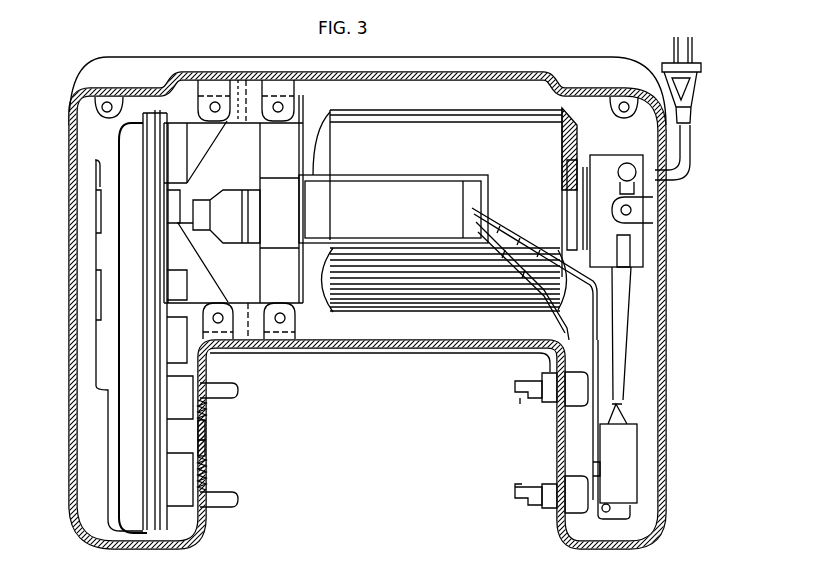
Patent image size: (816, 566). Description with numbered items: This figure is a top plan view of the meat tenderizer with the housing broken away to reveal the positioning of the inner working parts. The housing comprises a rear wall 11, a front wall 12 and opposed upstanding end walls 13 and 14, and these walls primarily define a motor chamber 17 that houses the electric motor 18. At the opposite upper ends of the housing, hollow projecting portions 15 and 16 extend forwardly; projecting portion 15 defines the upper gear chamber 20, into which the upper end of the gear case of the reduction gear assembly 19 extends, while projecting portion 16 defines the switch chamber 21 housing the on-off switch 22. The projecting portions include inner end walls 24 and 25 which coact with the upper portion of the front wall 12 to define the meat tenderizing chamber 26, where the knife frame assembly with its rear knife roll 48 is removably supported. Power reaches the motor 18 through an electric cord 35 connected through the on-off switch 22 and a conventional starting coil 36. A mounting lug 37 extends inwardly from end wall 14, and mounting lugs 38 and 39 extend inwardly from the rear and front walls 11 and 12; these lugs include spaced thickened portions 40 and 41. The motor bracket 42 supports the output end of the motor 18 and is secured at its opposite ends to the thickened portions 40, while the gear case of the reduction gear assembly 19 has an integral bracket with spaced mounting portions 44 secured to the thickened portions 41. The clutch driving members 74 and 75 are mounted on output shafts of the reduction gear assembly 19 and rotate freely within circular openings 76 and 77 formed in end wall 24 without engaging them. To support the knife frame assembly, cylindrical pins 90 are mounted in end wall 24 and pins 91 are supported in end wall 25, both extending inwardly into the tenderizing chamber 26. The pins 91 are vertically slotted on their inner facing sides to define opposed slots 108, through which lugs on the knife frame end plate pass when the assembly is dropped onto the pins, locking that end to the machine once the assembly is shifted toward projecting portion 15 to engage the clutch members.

The rear wall 11 is at (434, 68).
The front wall 12 is at (389, 350).
The end wall 13 is at (70, 265).
The end wall 14 is at (667, 256).
The hollow projecting portion 15 is at (78, 505).
The hollow projecting portion 16 is at (657, 507).
The motor chamber 17 is at (472, 92).
The electric motor 18 is at (389, 108).
The reduction gear assembly 19 is at (95, 245).
The upper gear chamber 20 is at (90, 452).
The switch chamber 21 is at (655, 426).
The on-off switch 22 is at (630, 457).
The inner end wall 24 is at (245, 436).
The inner end wall 25 is at (557, 437).
The meat tenderizing chamber 26 is at (379, 504).
The electric cord 35 is at (690, 152).
The starting coil 36 is at (428, 183).
The mounting lug 37 is at (652, 202).
The mounting lug 38 is at (250, 88).
The mounting lug 39 is at (254, 338).
The thickened portion 40 is at (283, 84).
The thickened portion 41 is at (210, 82).
The motor bracket 42 is at (294, 128).
The mounting portion 44 is at (197, 113).
The rear knife roll 48 is at (581, 453).
The clutch driving member 74 is at (208, 478).
The clutch driving member 75 is at (208, 413).
The circular opening 76 is at (207, 447).
The circular opening 77 is at (207, 435).
The pin 90 is at (239, 392).
The pin 91 is at (543, 378).
The slot 108 is at (532, 395).